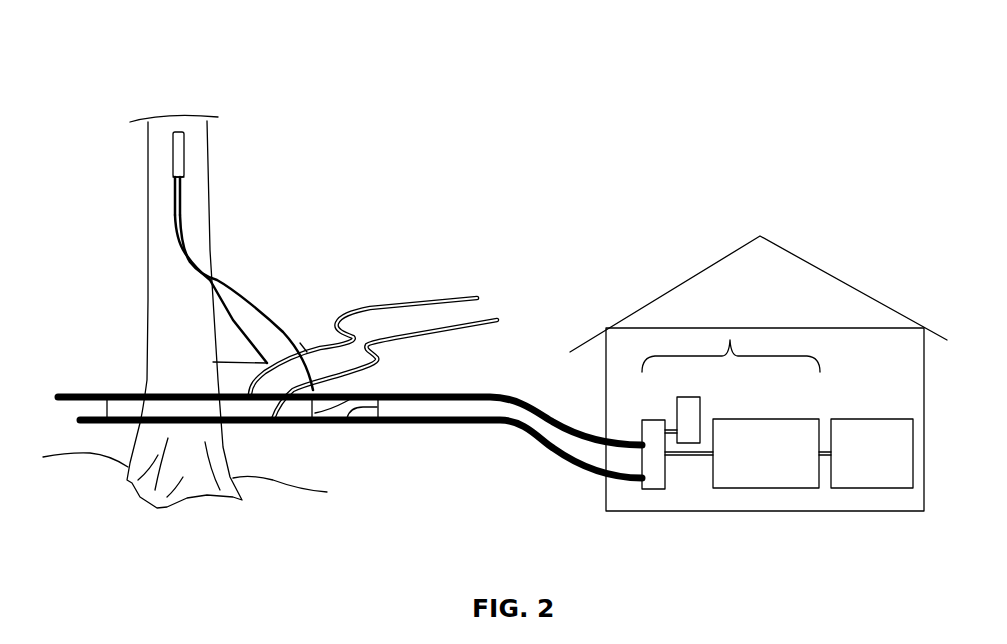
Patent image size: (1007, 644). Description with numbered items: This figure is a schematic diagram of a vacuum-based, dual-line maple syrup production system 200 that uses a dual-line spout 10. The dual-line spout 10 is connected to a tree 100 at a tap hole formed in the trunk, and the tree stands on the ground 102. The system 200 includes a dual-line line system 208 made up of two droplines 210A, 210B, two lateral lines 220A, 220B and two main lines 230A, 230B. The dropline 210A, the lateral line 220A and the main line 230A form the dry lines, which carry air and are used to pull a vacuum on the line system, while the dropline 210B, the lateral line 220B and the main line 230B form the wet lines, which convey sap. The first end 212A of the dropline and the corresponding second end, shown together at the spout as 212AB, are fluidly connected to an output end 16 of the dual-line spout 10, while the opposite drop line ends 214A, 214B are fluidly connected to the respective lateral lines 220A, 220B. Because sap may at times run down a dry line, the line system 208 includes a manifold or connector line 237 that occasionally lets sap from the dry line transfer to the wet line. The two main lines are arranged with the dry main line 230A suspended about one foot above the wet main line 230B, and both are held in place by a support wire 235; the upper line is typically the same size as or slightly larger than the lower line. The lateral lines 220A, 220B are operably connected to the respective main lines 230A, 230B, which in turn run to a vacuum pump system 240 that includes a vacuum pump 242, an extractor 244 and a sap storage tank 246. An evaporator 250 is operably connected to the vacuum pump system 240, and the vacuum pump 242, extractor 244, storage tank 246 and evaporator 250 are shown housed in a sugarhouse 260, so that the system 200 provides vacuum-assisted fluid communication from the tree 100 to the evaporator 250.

The vacuum-based, dual-line maple syrup production system 200 is at (372, 70).
The dual-line spout 10 is at (185, 142).
The output end 16 is at (173, 177).
The tree 100 is at (148, 282).
The ground 102 is at (120, 522).
The dual-line line system 208 is at (452, 215).
The dropline 210A is at (233, 303).
The dropline 210B is at (195, 258).
The first end 212A is at (173, 185).
The cable segment 212AB is at (185, 185).
The drop line end 214A is at (213, 362).
The drop line end 214B is at (300, 343).
The lateral line 220A is at (395, 308).
The lateral line 220B is at (487, 318).
The main line 230A is at (433, 393).
The main line 230B is at (412, 425).
The support wire 235 is at (107, 408).
The connector line 237 is at (358, 395).
The vacuum pump system 240 is at (731, 329).
The vacuum pump 242 is at (702, 413).
The extractor 244 is at (652, 489).
The sap storage tank 246 is at (772, 453).
The evaporator 250 is at (896, 466).
The sugarhouse 260 is at (829, 249).